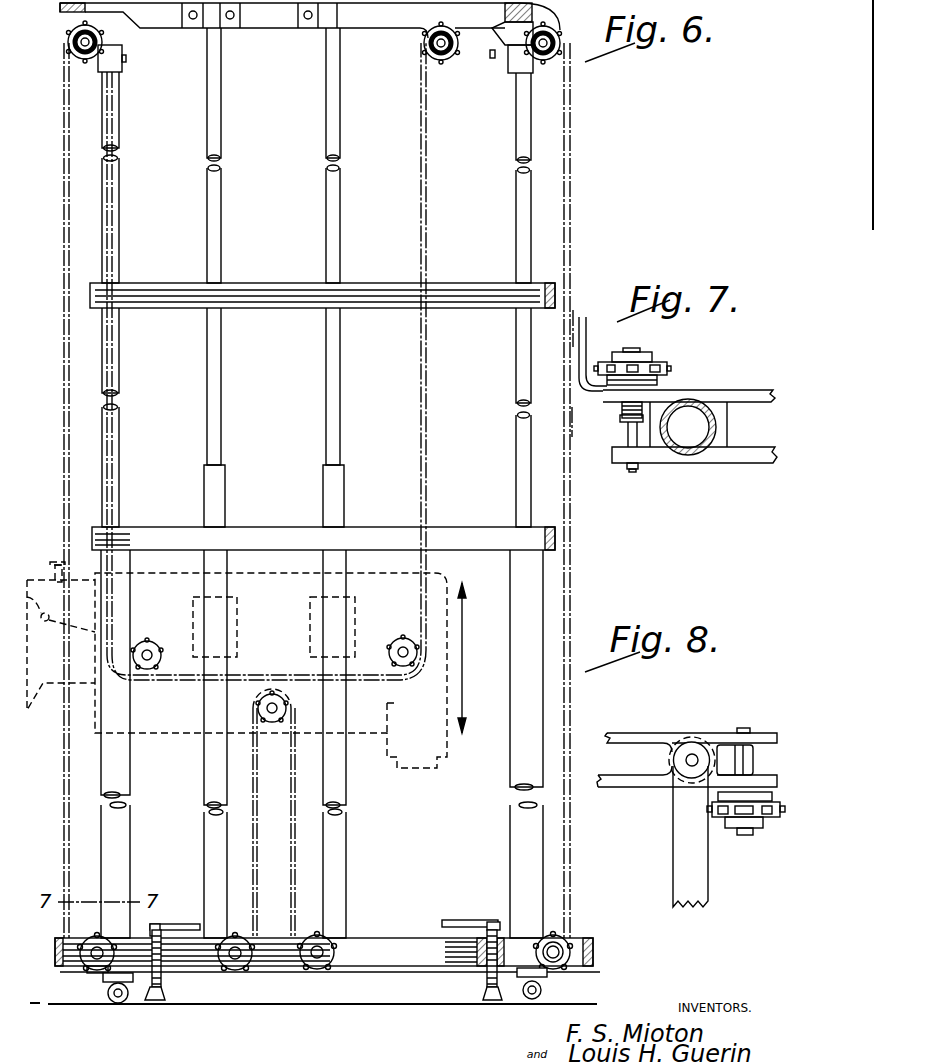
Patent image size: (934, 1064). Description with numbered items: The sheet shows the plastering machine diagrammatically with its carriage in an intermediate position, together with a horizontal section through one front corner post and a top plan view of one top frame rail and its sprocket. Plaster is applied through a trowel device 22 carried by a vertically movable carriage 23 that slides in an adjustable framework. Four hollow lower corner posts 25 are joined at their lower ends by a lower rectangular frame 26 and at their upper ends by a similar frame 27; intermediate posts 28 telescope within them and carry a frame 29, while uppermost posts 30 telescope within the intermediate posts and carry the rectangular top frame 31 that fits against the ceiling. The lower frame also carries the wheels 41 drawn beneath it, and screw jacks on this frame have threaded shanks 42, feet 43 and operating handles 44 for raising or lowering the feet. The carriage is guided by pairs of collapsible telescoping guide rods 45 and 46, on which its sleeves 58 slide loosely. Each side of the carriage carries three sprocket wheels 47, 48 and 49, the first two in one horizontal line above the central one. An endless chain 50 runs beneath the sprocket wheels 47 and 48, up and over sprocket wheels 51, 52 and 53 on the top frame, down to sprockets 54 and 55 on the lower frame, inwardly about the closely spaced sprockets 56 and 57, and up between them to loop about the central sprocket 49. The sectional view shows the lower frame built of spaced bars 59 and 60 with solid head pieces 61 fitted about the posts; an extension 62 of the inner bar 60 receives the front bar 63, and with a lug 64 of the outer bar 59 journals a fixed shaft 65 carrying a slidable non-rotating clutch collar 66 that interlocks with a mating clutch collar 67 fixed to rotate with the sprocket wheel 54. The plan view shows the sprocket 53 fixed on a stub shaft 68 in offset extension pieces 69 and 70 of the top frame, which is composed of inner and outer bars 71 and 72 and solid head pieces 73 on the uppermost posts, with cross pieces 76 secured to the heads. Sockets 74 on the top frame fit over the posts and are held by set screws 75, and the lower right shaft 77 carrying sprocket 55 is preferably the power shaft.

In FIG. 6, the trowel device 22 is at (42, 580).
In FIG. 6, the carriage 23 is at (262, 573).
In FIG. 6, the lower corner posts 25 is at (512, 805).
In FIG. 7, the lower corner posts 25 is at (693, 463).
In FIG. 6, the lower rectangular frame 26 is at (405, 940).
In FIG. 7, the lower rectangular frame 26 is at (689, 383).
In FIG. 6, the upper frame 27 is at (462, 528).
In FIG. 6, the intermediate posts 28 is at (120, 461).
In FIG. 6, the frame 29 is at (285, 290).
In FIG. 6, the uppermost posts 30 is at (518, 205).
In FIG. 8, the uppermost posts 30 is at (676, 733).
In FIG. 6, the rectangular top frame 31 is at (381, 14).
In FIG. 8, the rectangular top frame 31 is at (622, 733).
In FIG. 6, the caster wheel 41 is at (548, 990).
In FIG. 6, the threaded shanks 42 is at (487, 975).
In FIG. 6, the feet 43 is at (485, 998).
In FIG. 6, the operating handles 44 is at (460, 920).
In FIG. 6, the collapsible telescoping guide rods 45 is at (325, 476).
In FIG. 6, the collapsible telescoping guide rods 46 is at (330, 398).
In FIG. 6, the sprocket wheel 47 is at (148, 641).
In FIG. 6, the sprocket wheel 48 is at (400, 638).
In FIG. 6, the central sprocket wheel 49 is at (277, 690).
In FIG. 6, the chain 50 is at (428, 460).
In FIG. 6, the sprocket wheel 51 is at (88, 60).
In FIG. 6, the sprocket wheel 52 is at (448, 60).
In FIG. 6, the sprocket wheel 53 is at (560, 55).
In FIG. 8, the sprocket wheel 53 is at (772, 818).
In FIG. 6, the sprocket wheel 54 is at (95, 973).
In FIG. 7, the sprocket wheel 54 is at (650, 357).
In FIG. 6, the sprocket wheel 55 is at (565, 968).
In FIG. 6, the sprocket wheel 56 is at (240, 970).
In FIG. 6, the sprocket wheel 57 is at (318, 935).
In FIG. 6, the sleeves 58 is at (310, 617).
In FIG. 7, the outer bar 59 is at (762, 463).
In FIG. 7, the inner bar 60 is at (762, 390).
In FIG. 7, the solid head pieces 61 is at (664, 463).
In FIG. 7, the extension 62 is at (607, 396).
In FIG. 6, the front bar 63 is at (58, 968).
In FIG. 7, the front bar 63 is at (584, 318).
In FIG. 7, the lug 64 is at (616, 466).
In FIG. 7, the shaft 65 is at (630, 472).
In FIG. 7, the slidable clutch collar 66 is at (623, 420).
In FIG. 7, the mating clutch collar 67 is at (643, 402).
In FIG. 6, the stub shaft 68 is at (530, 55).
In FIG. 8, the stub shaft 68 is at (742, 728).
In FIG. 8, the extension piece 69 is at (772, 733).
In FIG. 8, the extension piece 70 is at (765, 778).
In FIG. 8, the inner bar 71 is at (644, 733).
In FIG. 8, the outer bar 72 is at (622, 788).
In FIG. 8, the solid head pieces 73 is at (698, 736).
In FIG. 6, the sockets 74 is at (525, 70).
In FIG. 6, the set screws 75 is at (503, 52).
In FIG. 6, the cross pieces 76 is at (500, 32).
In FIG. 8, the cross pieces 76 is at (703, 893).
In FIG. 6, the power shaft 77 is at (557, 948).